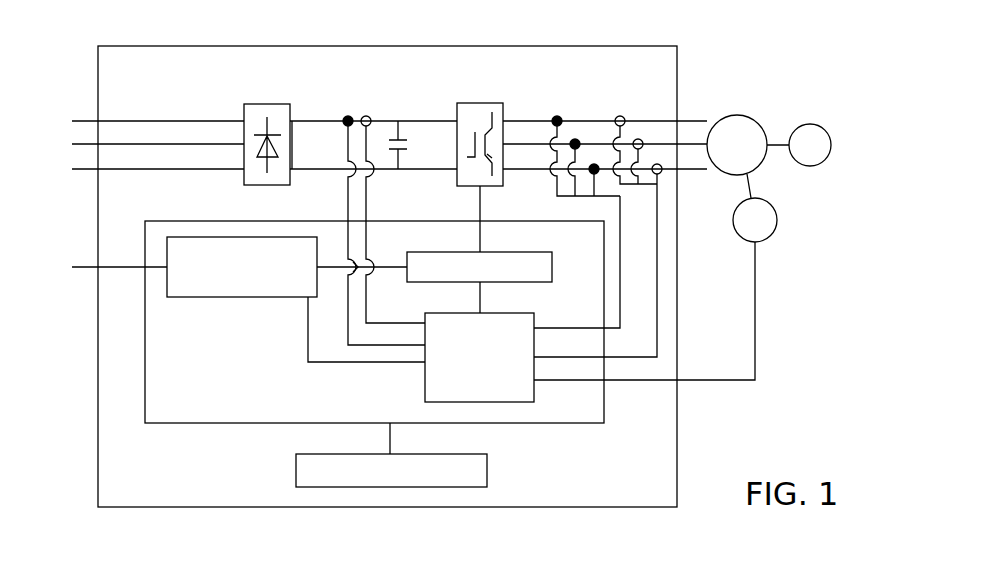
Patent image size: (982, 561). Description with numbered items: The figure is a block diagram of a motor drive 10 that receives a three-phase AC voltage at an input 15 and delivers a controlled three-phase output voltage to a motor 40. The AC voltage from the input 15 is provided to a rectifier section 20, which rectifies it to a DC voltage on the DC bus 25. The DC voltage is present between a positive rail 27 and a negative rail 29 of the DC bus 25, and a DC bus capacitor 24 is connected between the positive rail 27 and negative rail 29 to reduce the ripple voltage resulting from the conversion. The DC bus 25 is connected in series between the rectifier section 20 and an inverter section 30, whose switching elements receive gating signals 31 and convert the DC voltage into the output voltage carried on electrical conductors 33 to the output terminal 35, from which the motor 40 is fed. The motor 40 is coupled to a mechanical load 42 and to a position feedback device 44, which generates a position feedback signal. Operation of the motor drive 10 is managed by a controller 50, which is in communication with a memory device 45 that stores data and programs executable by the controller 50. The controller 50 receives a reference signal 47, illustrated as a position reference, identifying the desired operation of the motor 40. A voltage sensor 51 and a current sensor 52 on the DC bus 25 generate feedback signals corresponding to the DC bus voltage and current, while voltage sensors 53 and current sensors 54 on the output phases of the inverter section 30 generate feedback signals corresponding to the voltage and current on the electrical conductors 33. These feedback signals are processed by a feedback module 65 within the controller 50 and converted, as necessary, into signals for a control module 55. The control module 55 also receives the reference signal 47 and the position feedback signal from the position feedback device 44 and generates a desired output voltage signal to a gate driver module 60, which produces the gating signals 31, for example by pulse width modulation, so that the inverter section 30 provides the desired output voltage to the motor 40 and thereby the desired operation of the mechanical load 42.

The motor drive 10 is at (651, 21).
The input 15 is at (84, 109).
The rectifier section 20 is at (285, 104).
The DC bus capacitor 24 is at (419, 150).
The DC bus 25 is at (297, 127).
The positive rail 27 is at (302, 120).
The negative rail 29 is at (301, 161).
The inverter section 30 is at (482, 103).
The gating signals 31 is at (480, 198).
The electrical conductor 33 is at (588, 184).
The output terminal 35 is at (685, 108).
The motor 40 is at (752, 118).
The mechanical load 42 is at (794, 164).
The position feedback device 44 is at (772, 236).
The memory device 45 is at (447, 454).
The reference signal 47 is at (121, 267).
The controller 50 is at (235, 221).
The voltage sensor 51 is at (348, 116).
The current sensor 52 is at (368, 116).
The voltage sensors 53 is at (594, 164).
The current sensors 54 is at (657, 164).
The control module 55 is at (200, 297).
The gate driver module 60 is at (516, 282).
The feedback module 65 is at (514, 402).